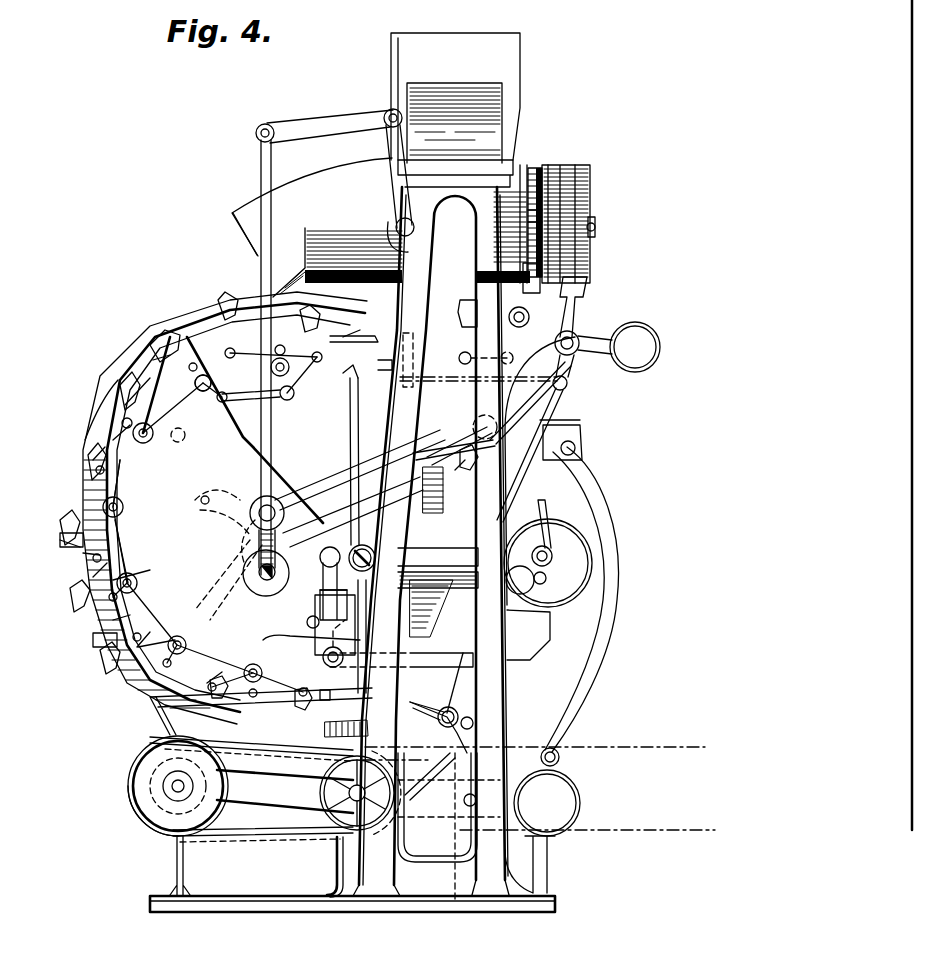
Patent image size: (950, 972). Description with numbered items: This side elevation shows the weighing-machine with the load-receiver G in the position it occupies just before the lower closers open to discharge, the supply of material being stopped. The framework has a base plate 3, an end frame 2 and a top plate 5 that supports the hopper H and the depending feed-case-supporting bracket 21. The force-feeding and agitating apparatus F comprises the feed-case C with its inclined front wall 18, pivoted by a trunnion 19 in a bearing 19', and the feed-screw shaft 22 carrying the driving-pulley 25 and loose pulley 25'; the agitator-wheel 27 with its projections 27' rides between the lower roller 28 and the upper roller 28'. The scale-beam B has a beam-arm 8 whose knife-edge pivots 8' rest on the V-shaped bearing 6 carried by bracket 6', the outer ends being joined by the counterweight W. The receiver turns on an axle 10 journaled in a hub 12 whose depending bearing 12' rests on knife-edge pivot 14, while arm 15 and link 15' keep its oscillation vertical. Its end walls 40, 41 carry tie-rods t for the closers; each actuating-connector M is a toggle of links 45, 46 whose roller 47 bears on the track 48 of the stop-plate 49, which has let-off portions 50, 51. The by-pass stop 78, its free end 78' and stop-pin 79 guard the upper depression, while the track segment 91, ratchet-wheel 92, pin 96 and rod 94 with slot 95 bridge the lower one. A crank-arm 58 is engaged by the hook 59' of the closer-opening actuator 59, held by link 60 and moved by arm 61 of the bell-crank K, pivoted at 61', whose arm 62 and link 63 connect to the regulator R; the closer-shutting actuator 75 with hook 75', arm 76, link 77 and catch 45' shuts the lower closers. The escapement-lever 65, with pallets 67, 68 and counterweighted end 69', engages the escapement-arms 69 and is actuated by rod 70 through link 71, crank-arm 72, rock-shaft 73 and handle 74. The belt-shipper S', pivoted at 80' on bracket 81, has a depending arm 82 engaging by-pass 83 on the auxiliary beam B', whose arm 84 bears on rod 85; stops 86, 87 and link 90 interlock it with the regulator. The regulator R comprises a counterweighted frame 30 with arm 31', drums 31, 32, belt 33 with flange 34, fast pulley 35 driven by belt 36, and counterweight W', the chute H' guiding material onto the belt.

The hopper H is at (455, 98).
The hopper flange 5 is at (503, 118).
The standard frame 2 is at (500, 733).
The base 3 is at (280, 900).
The cylinder C is at (381, 227).
The cylinder casing edge 18 is at (243, 238).
The vertical rod 15 is at (243, 349).
The link 15' is at (334, 116).
The arm 19' is at (381, 176).
The pivot 19 is at (382, 228).
The feed wheel F is at (566, 211).
The drum 25 is at (574, 206).
The drum section 25' is at (591, 215).
The ratchet wheel 28' is at (530, 198).
The shaft 21 is at (521, 200).
The pawl 27' is at (577, 205).
The pawl 27 is at (495, 230).
The shaft end 22 is at (596, 228).
The pawl bracket 28 is at (528, 285).
The pivot stud 73 is at (530, 317).
The hand lever 80' is at (587, 307).
The lever pivot 72 is at (555, 343).
The handle knob S' is at (619, 347).
The link pivot 81 is at (568, 383).
The connecting rod 82 is at (552, 402).
The guide plate 86 is at (576, 421).
The lug 87 is at (582, 442).
The curved brace 90 is at (613, 597).
The pivot pin 36 is at (620, 748).
The weight wheel W is at (548, 573).
The hub 83 is at (552, 522).
The lower weight W' is at (542, 831).
The bracket 69' is at (455, 306).
The rod 74 is at (414, 344).
The pin 85 is at (459, 359).
The pin 71 is at (503, 353).
The link 94 is at (447, 445).
The rod 70 is at (503, 467).
The lug 50 is at (383, 365).
The bar 68 is at (350, 335).
The vertical bar 84 is at (350, 449).
The plate B' is at (438, 566).
The bar 75 is at (401, 647).
The link 76 is at (458, 672).
The lever K is at (438, 716).
The pivot 61' is at (471, 703).
The pin 62 is at (473, 720).
The lever 61 is at (426, 718).
The rod 63 is at (440, 753).
The pulley 34 is at (137, 760).
The belt 33 is at (253, 748).
The belt 30 is at (285, 791).
The pulley 31 is at (345, 793).
The belt 35 is at (323, 814).
The pulley housing R is at (146, 845).
The pulley rim 32 is at (157, 807).
The support 31' is at (282, 852).
The housing H' is at (245, 712).
The picker wheel G is at (211, 508).
The hub 12 is at (256, 495).
The crank rod 12' is at (235, 550).
The crank pin 14 is at (259, 573).
The crank disk 8 is at (257, 579).
The cam 96 is at (258, 543).
The pawl 92 is at (233, 500).
The rod 95 is at (297, 517).
The arm 10 is at (282, 500).
The rod 8' is at (333, 567).
The bearing B is at (332, 564).
The bracket 6 is at (341, 592).
The pivot 6' is at (344, 632).
The screw 77 is at (307, 622).
The housing 51 is at (263, 640).
The rod 91 is at (203, 613).
The lug 75' is at (339, 701).
The lever 59 is at (255, 430).
The lever arm 59' is at (173, 358).
The link 60 is at (288, 400).
The link 78' is at (220, 419).
The pivot 78 is at (210, 422).
The pivot 79 is at (177, 442).
The bracket 67 is at (163, 343).
The ring 65 is at (343, 337).
The arm 48 is at (113, 440).
The arm 40 is at (87, 520).
The arm 41 is at (83, 553).
The arm 49 is at (113, 620).
The lever M is at (110, 567).
The picker lever 45 is at (233, 502).
The picker lever pivot 45' is at (225, 537).
The link 46 is at (237, 320).
The link 47 is at (173, 327).
The picker 58 is at (222, 300).
The picker holder 69 is at (267, 462).
The teeth t is at (130, 400).
The pivot pins pivots is at (207, 521).